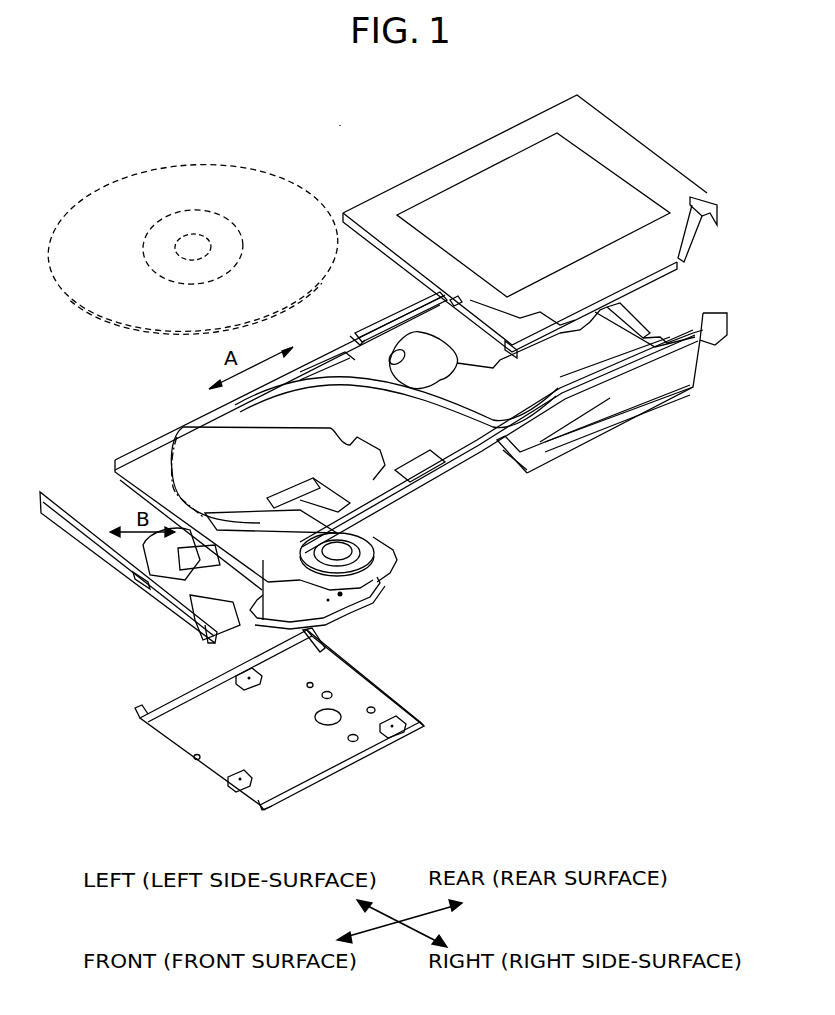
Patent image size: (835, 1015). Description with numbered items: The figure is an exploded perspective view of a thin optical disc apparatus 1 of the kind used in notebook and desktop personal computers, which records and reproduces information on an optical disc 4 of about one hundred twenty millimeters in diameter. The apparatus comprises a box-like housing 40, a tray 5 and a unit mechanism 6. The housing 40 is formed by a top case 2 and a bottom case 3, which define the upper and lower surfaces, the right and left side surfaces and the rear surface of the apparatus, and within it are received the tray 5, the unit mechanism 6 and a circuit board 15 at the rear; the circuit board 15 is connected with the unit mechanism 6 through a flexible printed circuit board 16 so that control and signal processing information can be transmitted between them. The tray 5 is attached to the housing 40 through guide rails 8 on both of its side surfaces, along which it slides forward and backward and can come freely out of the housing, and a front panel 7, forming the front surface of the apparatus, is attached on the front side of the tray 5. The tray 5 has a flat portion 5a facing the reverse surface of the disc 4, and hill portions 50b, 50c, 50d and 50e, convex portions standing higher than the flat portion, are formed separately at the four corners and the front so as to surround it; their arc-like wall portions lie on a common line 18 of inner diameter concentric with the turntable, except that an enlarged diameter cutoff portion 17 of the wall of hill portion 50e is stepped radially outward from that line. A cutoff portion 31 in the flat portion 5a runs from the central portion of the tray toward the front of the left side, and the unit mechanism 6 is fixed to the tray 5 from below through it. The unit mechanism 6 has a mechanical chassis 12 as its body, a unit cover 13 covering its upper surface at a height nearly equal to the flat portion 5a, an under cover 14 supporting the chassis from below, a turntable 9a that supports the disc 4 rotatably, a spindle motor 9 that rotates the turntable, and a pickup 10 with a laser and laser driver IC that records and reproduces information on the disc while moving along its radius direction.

The optical disc apparatus 1 is at (343, 131).
The top case 2 is at (468, 161).
The bottom case 3 is at (720, 338).
The optical disc 4 is at (112, 185).
The tray 5 is at (334, 339).
The flat portion 5a is at (415, 475).
The unit mechanism 6 is at (390, 532).
The front panel 7 is at (97, 547).
The guide rails 8 is at (440, 470).
The spindle motor 9 is at (305, 505).
The turntable 9a is at (357, 592).
The pickup 10 is at (192, 557).
The mechanical chassis 12 is at (323, 617).
The unit cover 13 is at (380, 600).
The under cover 14 is at (347, 753).
The circuit board 15 is at (663, 318).
The flexible printed circuit board 16 is at (532, 385).
The enlarged diameter cutoff portion 17 is at (153, 470).
The line of inner diameter 18 is at (177, 437).
The cutoff portion 31 is at (370, 422).
The housing 40 is at (667, 143).
The hill portion 50b is at (332, 368).
The hill portion 50c is at (517, 438).
The hill portion 50d is at (258, 632).
The hill portion 50e is at (115, 462).